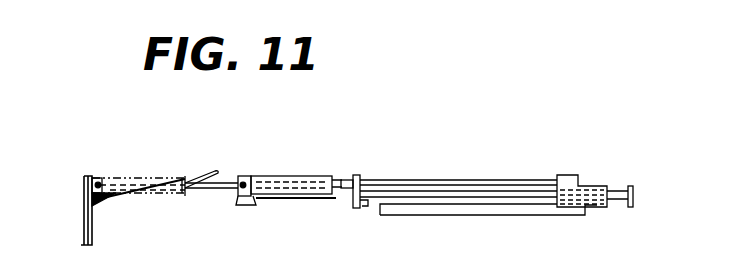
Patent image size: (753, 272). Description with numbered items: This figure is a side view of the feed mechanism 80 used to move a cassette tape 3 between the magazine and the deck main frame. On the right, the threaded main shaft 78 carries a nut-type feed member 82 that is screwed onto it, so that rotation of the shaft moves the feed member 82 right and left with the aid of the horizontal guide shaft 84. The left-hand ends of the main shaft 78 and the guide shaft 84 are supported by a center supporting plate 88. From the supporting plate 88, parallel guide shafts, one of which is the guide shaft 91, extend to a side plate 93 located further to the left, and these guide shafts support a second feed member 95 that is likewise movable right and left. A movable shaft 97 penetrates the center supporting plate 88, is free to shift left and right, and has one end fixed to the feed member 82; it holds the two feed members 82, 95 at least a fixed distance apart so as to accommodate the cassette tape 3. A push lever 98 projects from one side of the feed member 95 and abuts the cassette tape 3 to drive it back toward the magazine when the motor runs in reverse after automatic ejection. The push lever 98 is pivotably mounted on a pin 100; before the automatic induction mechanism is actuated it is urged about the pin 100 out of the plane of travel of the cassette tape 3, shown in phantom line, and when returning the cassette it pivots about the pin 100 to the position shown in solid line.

The cassette tape 3 is at (484, 216).
The main shaft 78 is at (619, 186).
The feed mechanism 80 is at (507, 173).
The feed member 82 is at (567, 175).
The guide shaft 84 is at (619, 207).
The center supporting plate 88 is at (359, 178).
The guide shaft 91 is at (206, 190).
The side plate 93 is at (84, 220).
The feed member 95 is at (305, 176).
The movable shaft 97 is at (452, 179).
The push lever 98 is at (184, 178).
The pin 100 is at (98, 182).